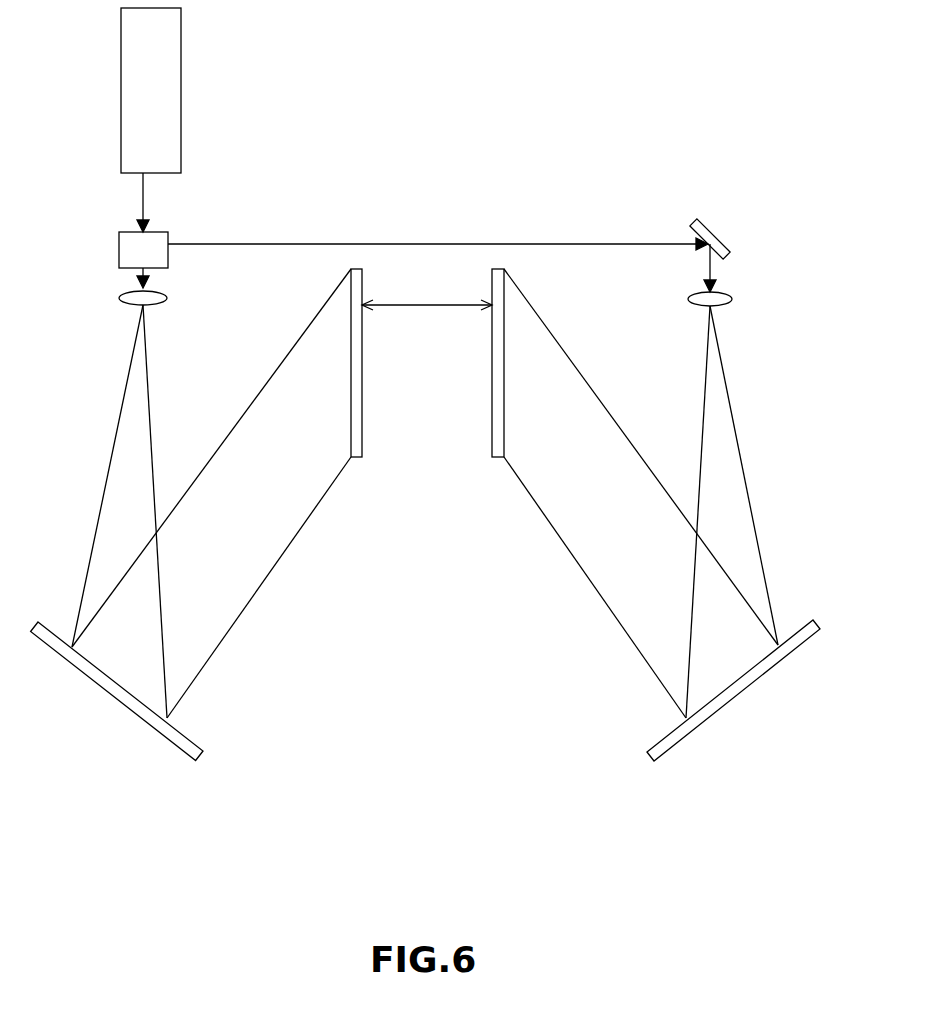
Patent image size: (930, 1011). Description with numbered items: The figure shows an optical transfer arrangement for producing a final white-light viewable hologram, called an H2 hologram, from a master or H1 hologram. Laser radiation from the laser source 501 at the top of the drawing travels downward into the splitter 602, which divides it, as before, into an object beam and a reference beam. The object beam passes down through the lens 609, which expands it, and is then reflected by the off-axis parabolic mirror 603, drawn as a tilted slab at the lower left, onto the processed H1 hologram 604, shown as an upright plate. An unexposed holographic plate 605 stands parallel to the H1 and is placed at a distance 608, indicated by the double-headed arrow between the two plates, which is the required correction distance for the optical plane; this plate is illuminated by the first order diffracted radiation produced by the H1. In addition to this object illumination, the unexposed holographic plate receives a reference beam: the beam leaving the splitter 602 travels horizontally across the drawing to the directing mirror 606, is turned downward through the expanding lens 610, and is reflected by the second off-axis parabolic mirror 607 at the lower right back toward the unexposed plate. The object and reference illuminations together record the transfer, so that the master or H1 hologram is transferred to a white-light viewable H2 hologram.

The light source 501 is at (151, 90).
The splitter 602 is at (114, 250).
The off-axis parabolic mirror 603 is at (117, 691).
The processed H1 hologram 604 is at (374, 378).
The unexposed holographic plate 605 is at (474, 372).
The directing mirror 606 is at (723, 226).
The off-axis parabolic mirror 607 is at (733, 690).
The distance 608 is at (427, 293).
The lens 609 is at (172, 300).
The expanding lens 610 is at (740, 298).